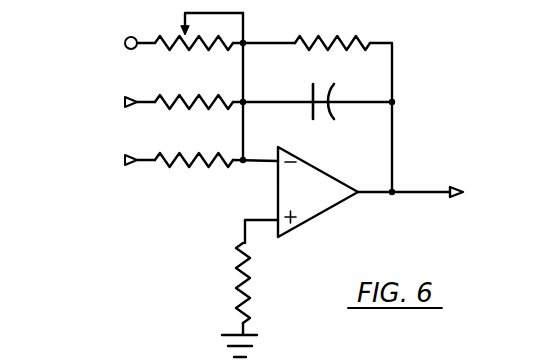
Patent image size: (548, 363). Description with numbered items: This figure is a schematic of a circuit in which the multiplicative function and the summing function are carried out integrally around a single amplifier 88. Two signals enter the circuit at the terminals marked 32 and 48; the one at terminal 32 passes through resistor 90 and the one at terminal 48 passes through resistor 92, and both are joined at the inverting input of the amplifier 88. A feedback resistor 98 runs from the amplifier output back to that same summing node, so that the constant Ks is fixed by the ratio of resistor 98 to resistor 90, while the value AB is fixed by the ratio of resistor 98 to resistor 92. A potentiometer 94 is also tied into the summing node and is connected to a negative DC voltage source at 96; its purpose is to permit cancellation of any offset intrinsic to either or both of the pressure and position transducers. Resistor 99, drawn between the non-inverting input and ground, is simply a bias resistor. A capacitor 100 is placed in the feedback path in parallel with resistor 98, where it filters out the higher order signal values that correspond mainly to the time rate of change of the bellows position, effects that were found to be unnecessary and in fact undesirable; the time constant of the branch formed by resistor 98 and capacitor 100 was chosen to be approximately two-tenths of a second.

The negative DC voltage source 96 is at (125, 37).
The potentiometer 94 is at (197, 48).
The input signal 32 is at (128, 108).
The resistor 90 is at (200, 108).
The input signal 48 is at (128, 166).
The resistor 92 is at (200, 168).
The resistor 98 is at (338, 35).
The capacitor 100 is at (357, 132).
The operational amplifier 88 is at (324, 214).
The bias resistor 99 is at (238, 283).